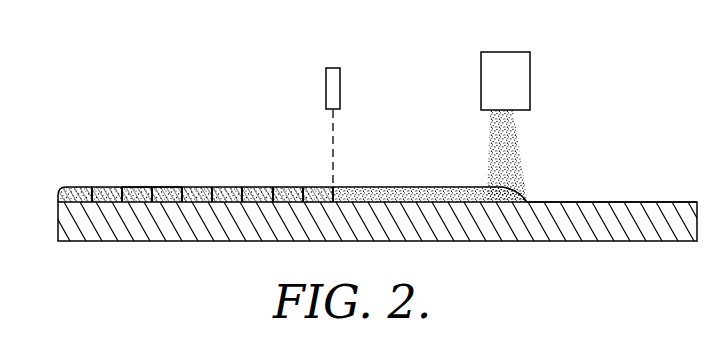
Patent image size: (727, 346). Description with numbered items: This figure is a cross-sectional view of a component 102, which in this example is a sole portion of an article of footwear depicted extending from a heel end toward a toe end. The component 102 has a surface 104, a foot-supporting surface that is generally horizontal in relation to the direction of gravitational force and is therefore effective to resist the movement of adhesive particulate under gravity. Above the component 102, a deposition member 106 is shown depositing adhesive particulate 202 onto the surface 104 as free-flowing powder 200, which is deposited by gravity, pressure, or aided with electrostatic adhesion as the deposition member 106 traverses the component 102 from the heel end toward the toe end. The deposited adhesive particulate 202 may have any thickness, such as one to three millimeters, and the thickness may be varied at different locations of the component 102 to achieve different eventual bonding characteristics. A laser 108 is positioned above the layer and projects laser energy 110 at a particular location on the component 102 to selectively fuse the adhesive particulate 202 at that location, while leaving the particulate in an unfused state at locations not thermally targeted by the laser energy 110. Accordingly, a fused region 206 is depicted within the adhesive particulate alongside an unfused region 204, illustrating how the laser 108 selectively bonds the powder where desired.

The component 102 is at (113, 244).
The surface 104 is at (650, 200).
The deposition member 106 is at (513, 49).
The laser 108 is at (337, 65).
The laser energy 110 is at (329, 147).
The free-flowing powder 200 is at (528, 150).
The adhesive particulate 202 is at (403, 184).
The unfused region 204 is at (113, 184).
The fused region 206 is at (153, 184).